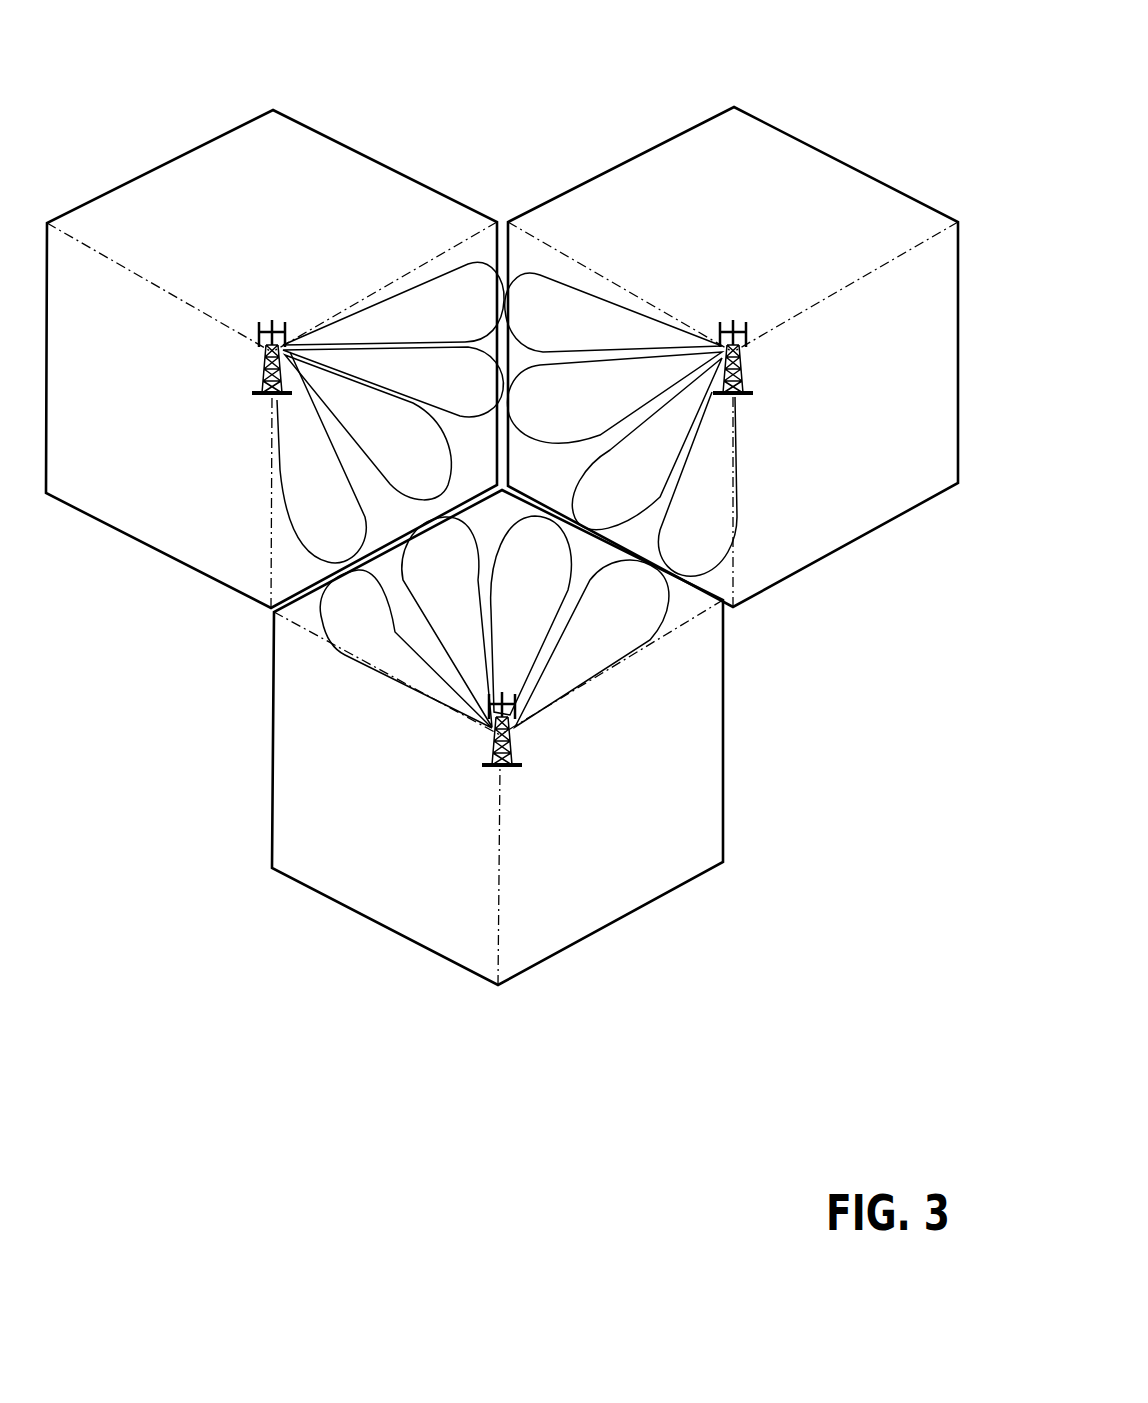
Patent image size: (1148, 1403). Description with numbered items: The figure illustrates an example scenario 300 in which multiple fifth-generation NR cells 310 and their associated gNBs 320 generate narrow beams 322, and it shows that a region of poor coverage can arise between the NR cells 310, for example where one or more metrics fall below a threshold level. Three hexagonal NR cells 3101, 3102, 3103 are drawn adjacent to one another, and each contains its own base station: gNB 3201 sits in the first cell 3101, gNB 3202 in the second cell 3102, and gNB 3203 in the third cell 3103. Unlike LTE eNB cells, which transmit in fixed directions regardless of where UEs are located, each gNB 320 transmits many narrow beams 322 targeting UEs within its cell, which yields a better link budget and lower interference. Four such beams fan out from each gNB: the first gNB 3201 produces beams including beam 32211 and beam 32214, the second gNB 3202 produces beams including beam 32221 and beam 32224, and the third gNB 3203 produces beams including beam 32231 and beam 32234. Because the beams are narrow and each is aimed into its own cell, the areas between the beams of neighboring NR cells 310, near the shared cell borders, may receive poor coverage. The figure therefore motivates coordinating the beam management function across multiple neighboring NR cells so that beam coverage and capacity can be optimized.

The example scenario 300 is at (628, 44).
The NR cells 310 is at (502, 547).
The NR cell 3101 is at (498, 985).
The NR cell 3102 is at (734, 107).
The NR cell 3103 is at (273, 110).
The gNBs 320 is at (502, 547).
The gNB 3201 is at (522, 766).
The gNB 3202 is at (722, 325).
The gNB 3203 is at (284, 325).
The beams 322 is at (518, 494).
The beam 32211 is at (590, 680).
The beam 32214 is at (392, 680).
The beam 32221 is at (605, 286).
The beam 32224 is at (742, 487).
The beam 32231 is at (400, 285).
The beam 32234 is at (284, 486).